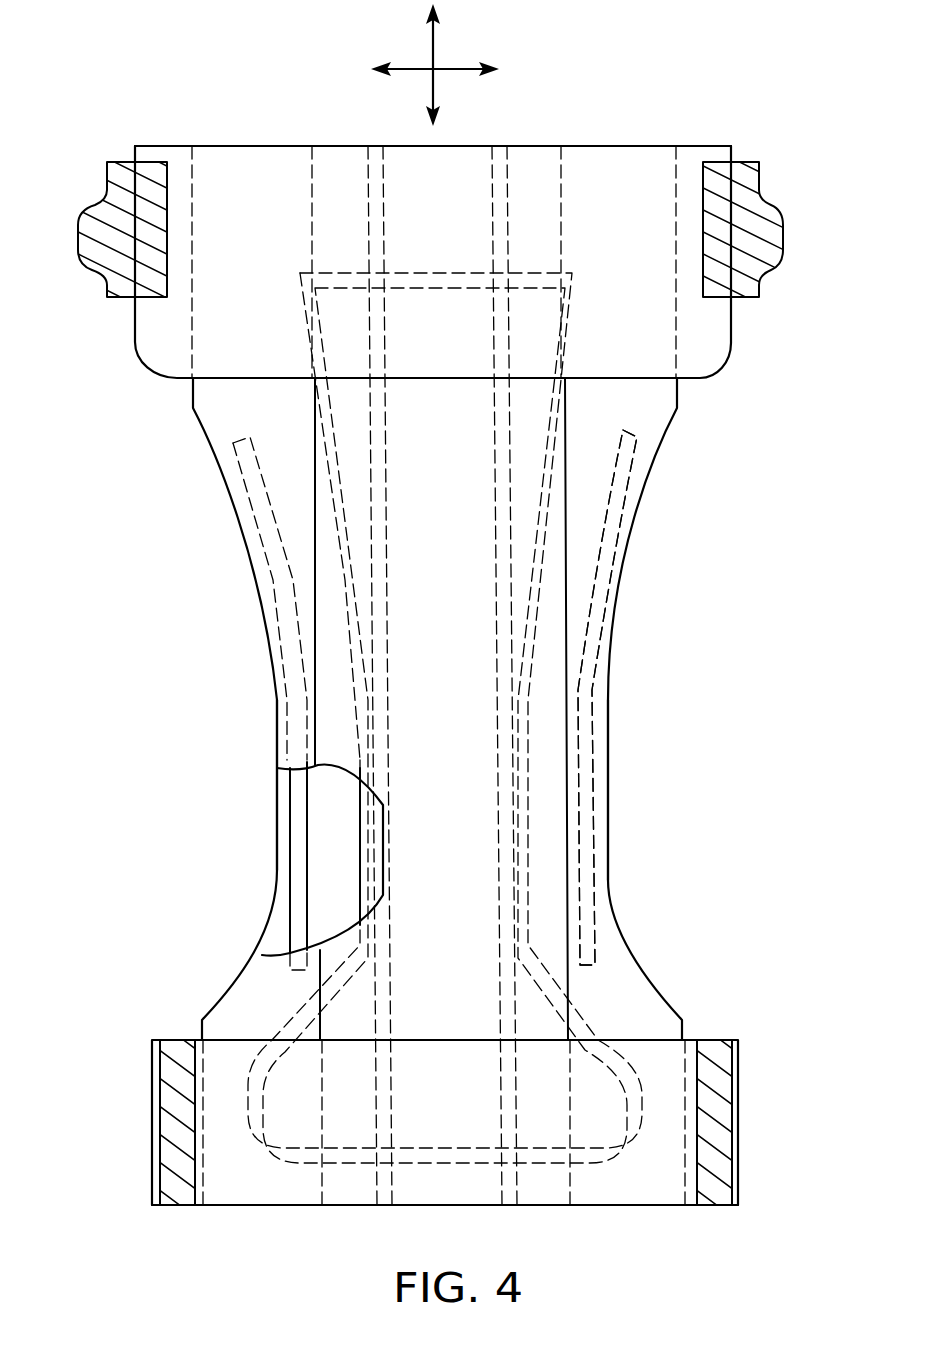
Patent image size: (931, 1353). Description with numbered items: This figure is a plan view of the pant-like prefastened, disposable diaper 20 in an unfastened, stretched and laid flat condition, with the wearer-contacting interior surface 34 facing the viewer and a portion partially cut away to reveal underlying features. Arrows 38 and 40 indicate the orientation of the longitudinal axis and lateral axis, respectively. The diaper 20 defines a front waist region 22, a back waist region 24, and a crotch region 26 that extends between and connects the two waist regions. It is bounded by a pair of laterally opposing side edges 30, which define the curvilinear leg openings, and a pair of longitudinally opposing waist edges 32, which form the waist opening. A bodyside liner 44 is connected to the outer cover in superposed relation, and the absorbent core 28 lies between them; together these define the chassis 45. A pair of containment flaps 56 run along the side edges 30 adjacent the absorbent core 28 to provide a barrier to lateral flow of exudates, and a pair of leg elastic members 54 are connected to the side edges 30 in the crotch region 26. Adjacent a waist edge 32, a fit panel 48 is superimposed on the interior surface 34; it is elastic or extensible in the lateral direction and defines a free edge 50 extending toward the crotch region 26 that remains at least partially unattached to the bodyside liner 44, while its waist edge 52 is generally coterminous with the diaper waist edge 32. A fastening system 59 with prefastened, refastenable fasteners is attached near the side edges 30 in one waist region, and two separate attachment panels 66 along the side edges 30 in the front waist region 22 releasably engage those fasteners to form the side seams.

The diaper 20 is at (99, 145).
The front waist region 22 is at (752, 1030).
The back waist region 24 is at (750, 318).
The crotch region 26 is at (648, 740).
The absorbent core 28 is at (382, 845).
The side edges 30 is at (290, 707).
The waist edges 32 is at (607, 146).
The interior surface 34 is at (590, 440).
The arrow depicting longitudinal axis 38 is at (436, 48).
The arrow depicting lateral axis 40 is at (448, 69).
The bodyside liner 44 is at (430, 667).
The chassis 45 is at (268, 733).
The fit panel 48 is at (268, 358).
The free edge 50 is at (450, 378).
The waist edge of the fit panel 52 is at (243, 158).
The leg elastic members 54 is at (270, 535).
The containment flaps 56 is at (323, 495).
The fastening system 59 is at (90, 287).
The attachment panels 66 is at (175, 1052).